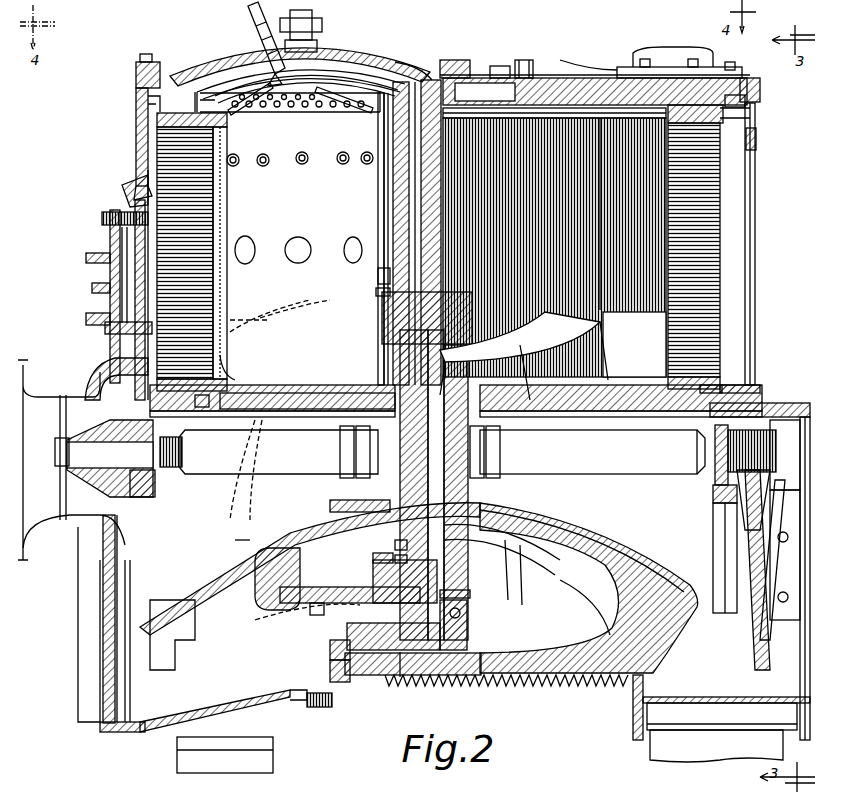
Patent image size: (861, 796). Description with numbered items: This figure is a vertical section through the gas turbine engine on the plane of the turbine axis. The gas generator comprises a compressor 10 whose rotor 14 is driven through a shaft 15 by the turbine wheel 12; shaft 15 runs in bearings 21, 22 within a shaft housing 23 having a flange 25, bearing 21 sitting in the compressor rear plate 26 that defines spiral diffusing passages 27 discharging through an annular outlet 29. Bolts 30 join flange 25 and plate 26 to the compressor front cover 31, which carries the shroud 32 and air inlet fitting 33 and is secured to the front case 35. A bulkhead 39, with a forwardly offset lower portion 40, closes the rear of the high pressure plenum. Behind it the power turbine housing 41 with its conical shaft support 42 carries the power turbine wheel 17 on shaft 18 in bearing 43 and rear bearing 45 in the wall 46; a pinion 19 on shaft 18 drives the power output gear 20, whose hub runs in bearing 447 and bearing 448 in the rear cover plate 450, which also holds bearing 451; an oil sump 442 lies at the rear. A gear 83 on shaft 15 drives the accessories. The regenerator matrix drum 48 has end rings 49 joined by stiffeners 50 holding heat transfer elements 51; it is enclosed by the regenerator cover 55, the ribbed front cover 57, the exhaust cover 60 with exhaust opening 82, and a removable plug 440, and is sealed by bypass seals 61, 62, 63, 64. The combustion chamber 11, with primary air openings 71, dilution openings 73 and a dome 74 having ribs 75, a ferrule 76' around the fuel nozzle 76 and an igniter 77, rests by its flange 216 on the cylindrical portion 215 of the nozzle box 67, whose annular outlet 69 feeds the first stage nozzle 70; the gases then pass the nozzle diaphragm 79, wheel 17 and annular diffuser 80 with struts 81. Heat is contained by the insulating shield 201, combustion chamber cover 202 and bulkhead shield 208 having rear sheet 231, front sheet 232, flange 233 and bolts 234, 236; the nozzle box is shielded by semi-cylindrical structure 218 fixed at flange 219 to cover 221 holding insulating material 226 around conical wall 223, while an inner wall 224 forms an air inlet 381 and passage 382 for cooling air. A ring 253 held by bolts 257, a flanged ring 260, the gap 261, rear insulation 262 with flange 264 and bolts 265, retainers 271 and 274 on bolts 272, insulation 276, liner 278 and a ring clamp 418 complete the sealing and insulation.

The compressor 10 is at (76, 538).
The combustion chamber 11 is at (380, 195).
The turbine wheel 12 is at (364, 442).
The rotor 14 is at (85, 425).
The shaft 15 is at (208, 476).
The power turbine wheel 17 is at (500, 448).
The power turbine shaft 18 is at (618, 470).
The pinion 19 is at (762, 444).
The power output gear 20 is at (756, 670).
The bearing 21 is at (142, 486).
The bearing 22 is at (366, 462).
The shaft housing 23 is at (236, 545).
The circular flange 25 is at (122, 272).
The compressor rear plate 26 is at (126, 572).
The diffusing passage 27 is at (110, 700).
The annular outlet 29 is at (132, 180).
The bolts 30 is at (102, 219).
The compressor front cover 31 is at (108, 238).
The shroud 32 is at (108, 372).
The air inlet fitting 33 is at (40, 390).
The front case 35 is at (204, 740).
The bulkhead 39 is at (447, 75).
The lower outer portion of bulkhead 40 is at (320, 702).
The power turbine housing 41 is at (523, 690).
The shaft support 42 is at (665, 412).
The bearing 43 is at (500, 470).
The rear bearing 45 is at (718, 492).
The wall 46 is at (745, 520).
The matrix drum 48 is at (175, 158).
The end rings 49 is at (752, 110).
The stiffeners 50 is at (545, 140).
The heat transfer shims 51 is at (598, 136).
The regenerator cover 55 is at (137, 85).
The front cover 57 is at (207, 50).
The exhaust cover 60 is at (756, 142).
The front upper bypass seal 61 is at (186, 104).
The rear upper bypass seal 62 is at (744, 80).
The front lower bypass seal 63 is at (205, 410).
The rear lower bypass seal 64 is at (712, 385).
The nozzle box 67 is at (306, 312).
The annular outlet 69 is at (396, 545).
The first stage turbine nozzle 70 is at (396, 560).
The primary air openings 71 is at (312, 164).
The dilution air openings 73 is at (305, 258).
The dome 74 is at (342, 72).
The ribs 75 is at (240, 102).
The fuel nozzle 76 is at (302, 28).
The ferrule 76' is at (302, 106).
The igniter 77 is at (262, 30).
The nozzle diaphragm 79 is at (448, 366).
The annular diffuser 80 is at (503, 585).
The struts 81 is at (520, 565).
The opening 82 is at (755, 306).
The gear 83 is at (172, 470).
The insulating shield 201 is at (372, 46).
The combustion chamber cover 202 is at (395, 62).
The bulkhead insulating shield 208 is at (380, 170).
The cylindrical portion 215 is at (240, 322).
The flange 216 is at (378, 292).
The semi-cylindrical structure 218 is at (400, 605).
The bolting flange 219 is at (306, 610).
The sheet metal structure 221 is at (266, 425).
The conical wall 223 is at (262, 392).
The inner wall 224 is at (306, 392).
The insulating material 226 is at (254, 590).
The rear sheet 231 is at (386, 222).
The front sheet 232 is at (380, 275).
The circular flange 233 is at (420, 634).
The bolts 234 is at (445, 640).
The bolts 236 is at (432, 76).
The sheet metal ring 253 is at (385, 340).
The bolts 257 is at (376, 565).
The flanged ring 260 is at (382, 320).
The gap 261 is at (136, 100).
The insulating material 262 is at (396, 128).
The forward flange 264 is at (400, 680).
The bolts 265 is at (482, 118).
The sheet metal retainer 271 is at (500, 80).
The bolts 272 is at (662, 68).
The retainer 274 is at (747, 99).
The thermal insulating material 276 is at (770, 400).
The liner 278 is at (588, 604).
The air inlet 381 is at (226, 360).
The annular passage 382 is at (355, 506).
The ring clamp 418 is at (460, 616).
The removable plug 440 is at (576, 55).
The oil sump 442 is at (662, 757).
The bearing 447 is at (728, 605).
The bearing 448 is at (782, 605).
The rear cover plate 450 is at (776, 703).
The bearing 451 is at (785, 417).